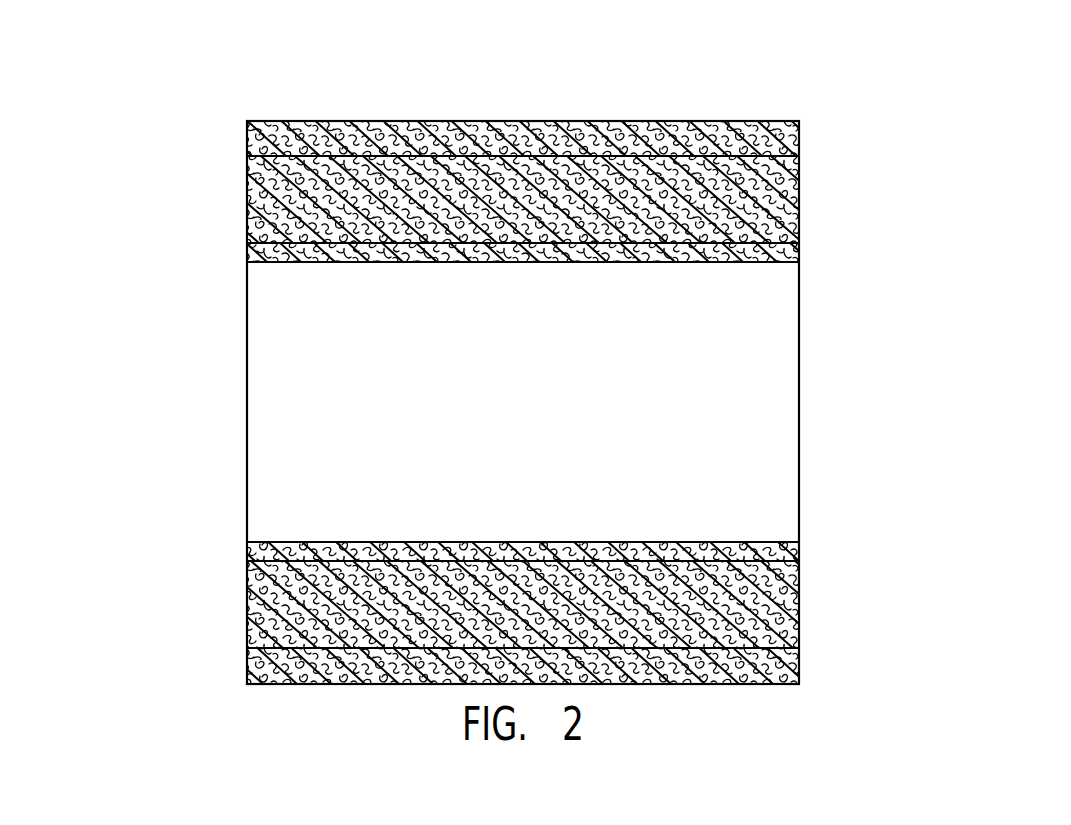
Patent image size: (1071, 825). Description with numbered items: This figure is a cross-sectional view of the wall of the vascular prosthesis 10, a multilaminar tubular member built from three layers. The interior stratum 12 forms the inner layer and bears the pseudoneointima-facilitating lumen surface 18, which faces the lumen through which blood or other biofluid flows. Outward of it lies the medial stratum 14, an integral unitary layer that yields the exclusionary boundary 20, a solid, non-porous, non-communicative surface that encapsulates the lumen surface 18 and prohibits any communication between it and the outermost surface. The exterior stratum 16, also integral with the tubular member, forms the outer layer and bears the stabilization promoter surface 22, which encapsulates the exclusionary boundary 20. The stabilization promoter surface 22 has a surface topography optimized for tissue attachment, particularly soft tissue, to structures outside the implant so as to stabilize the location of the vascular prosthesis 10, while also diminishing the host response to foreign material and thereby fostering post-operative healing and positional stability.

The vascular prosthesis 10 is at (143, 107).
The interior stratum 12 is at (243, 250).
The medial stratum 14 is at (243, 177).
The exterior stratum 16 is at (245, 128).
The pseudoneointima-facilitating lumen surface 18 is at (295, 263).
The exclusionary boundary 20 is at (257, 212).
The stabilization promoter surface 22 is at (262, 120).